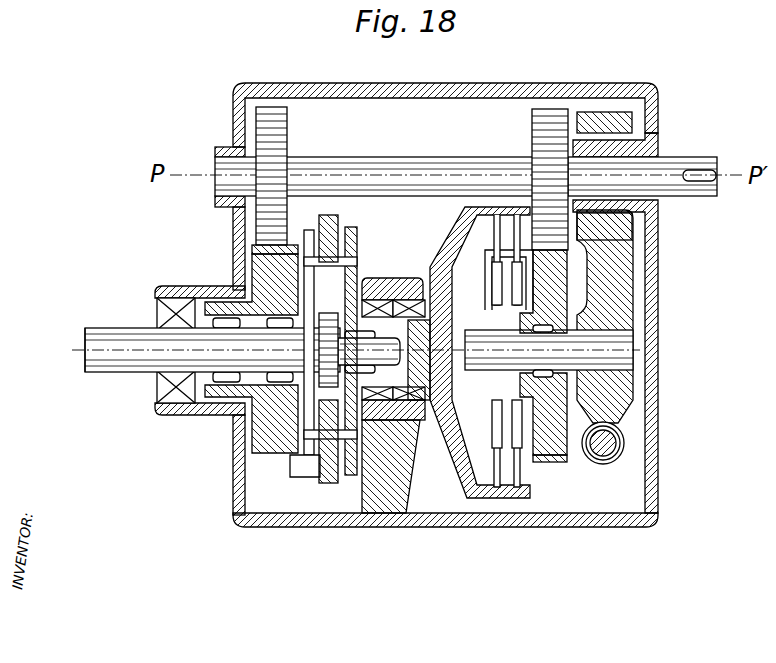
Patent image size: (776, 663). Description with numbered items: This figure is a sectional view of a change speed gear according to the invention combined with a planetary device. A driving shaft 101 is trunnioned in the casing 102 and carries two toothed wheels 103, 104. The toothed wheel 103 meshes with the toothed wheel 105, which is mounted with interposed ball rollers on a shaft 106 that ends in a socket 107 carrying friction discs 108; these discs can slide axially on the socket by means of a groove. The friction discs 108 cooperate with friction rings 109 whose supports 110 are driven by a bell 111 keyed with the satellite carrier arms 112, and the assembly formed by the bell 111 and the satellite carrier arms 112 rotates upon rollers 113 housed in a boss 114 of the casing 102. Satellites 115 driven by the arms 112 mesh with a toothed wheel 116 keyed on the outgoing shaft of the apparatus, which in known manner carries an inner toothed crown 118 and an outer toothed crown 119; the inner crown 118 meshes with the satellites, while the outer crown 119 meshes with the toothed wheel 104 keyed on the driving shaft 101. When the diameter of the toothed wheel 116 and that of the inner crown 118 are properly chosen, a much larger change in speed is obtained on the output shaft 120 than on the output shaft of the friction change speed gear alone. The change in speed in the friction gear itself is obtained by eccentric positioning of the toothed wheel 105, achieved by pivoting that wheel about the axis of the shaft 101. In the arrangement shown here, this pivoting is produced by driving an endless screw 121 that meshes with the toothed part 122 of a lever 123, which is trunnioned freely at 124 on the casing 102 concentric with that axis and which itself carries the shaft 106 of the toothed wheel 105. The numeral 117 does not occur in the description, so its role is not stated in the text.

The driving shaft 101 is at (425, 165).
The casing 102 is at (362, 83).
The toothed wheel 103 is at (556, 112).
The toothed wheel 104 is at (272, 128).
The toothed wheel 105 is at (547, 263).
The shaft 106 is at (590, 362).
The socket 107 is at (553, 457).
The friction discs 108 is at (513, 450).
The friction rings 109 is at (487, 245).
The supports 110 is at (518, 218).
The bell 111 is at (443, 265).
The satellite carrier arms 112 is at (342, 222).
The rollers 113 is at (403, 402).
The boss 114 is at (380, 495).
The satellites 115 is at (320, 480).
The toothed wheel 116 is at (320, 378).
The hub 117 is at (267, 270).
The inner toothed crown 118 is at (305, 232).
The outer toothed crown 119 is at (262, 250).
The output shaft 120 is at (110, 325).
The endless screw 121 is at (625, 450).
The toothed part 122 is at (605, 410).
The lever 123 is at (607, 277).
The trunnion 124 is at (660, 137).